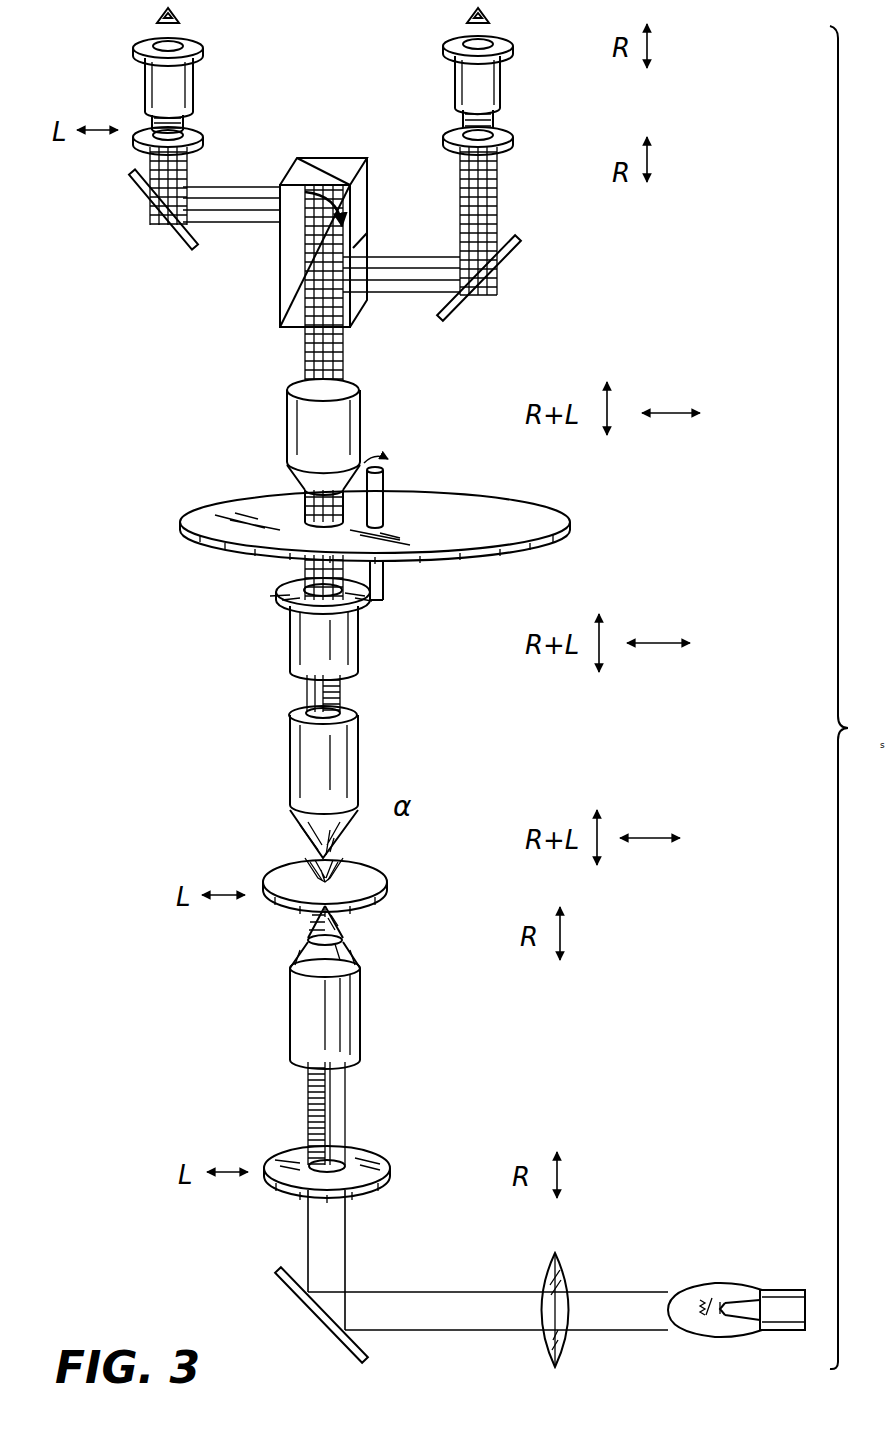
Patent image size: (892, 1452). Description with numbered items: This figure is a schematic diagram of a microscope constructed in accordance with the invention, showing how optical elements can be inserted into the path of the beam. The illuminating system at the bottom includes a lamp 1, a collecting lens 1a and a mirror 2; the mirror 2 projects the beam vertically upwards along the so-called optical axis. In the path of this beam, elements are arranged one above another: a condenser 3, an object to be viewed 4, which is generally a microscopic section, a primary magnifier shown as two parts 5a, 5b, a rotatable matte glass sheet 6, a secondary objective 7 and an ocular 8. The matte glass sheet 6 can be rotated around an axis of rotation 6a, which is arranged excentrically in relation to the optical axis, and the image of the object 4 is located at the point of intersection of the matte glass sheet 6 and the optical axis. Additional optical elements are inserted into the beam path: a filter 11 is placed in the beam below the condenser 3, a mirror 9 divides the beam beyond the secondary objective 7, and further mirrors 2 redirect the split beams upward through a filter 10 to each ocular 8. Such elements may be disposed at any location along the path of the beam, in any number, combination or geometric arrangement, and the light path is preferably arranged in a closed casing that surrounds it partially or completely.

The lamp 1 is at (722, 1338).
The collecting lens 1a is at (565, 1348).
The mirror 2 is at (170, 220).
The condenser 3 is at (350, 1031).
The object to be viewed 4 is at (387, 888).
The primary magnifier 5a is at (357, 760).
The primary magnifier 5b is at (357, 642).
The rotatable matte glass sheet 6 is at (567, 528).
The axis of rotation 6a is at (387, 478).
The secondary objective 7 is at (345, 417).
The ocular 8 is at (186, 90).
The mirror 9 is at (283, 293).
The filter 10 is at (200, 137).
The filter 11 is at (370, 1163).